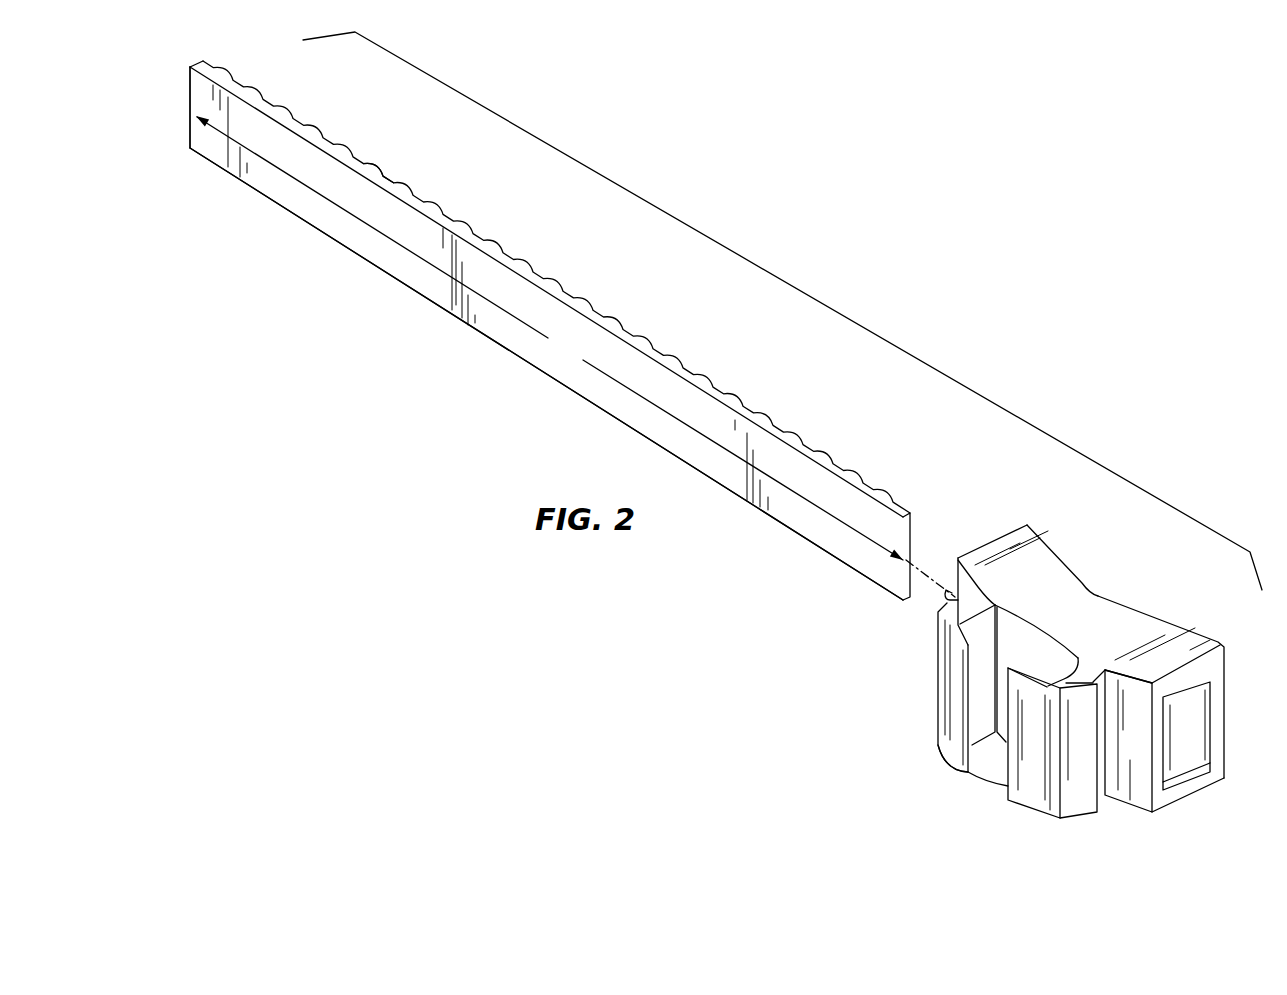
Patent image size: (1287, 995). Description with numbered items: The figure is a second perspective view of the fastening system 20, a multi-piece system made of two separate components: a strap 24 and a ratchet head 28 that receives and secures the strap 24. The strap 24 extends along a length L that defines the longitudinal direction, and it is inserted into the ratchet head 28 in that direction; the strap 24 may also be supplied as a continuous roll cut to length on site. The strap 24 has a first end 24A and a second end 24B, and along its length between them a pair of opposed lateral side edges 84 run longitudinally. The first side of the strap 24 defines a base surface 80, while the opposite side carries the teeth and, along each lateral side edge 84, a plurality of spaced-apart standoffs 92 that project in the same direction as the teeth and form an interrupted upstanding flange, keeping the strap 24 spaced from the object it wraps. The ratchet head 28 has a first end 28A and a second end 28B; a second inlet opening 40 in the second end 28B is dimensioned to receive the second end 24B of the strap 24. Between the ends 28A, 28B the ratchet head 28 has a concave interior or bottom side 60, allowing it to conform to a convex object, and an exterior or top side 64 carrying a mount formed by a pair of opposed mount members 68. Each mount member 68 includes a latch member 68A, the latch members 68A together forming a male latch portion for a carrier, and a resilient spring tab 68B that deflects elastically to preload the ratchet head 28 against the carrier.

The fastening system 20 is at (708, 237).
The strap 24 is at (563, 330).
The first end of the strap 24A is at (908, 527).
The second end of the strap 24B is at (190, 127).
The ratchet head 28 is at (1134, 575).
The first end of the ratchet head 28A is at (988, 546).
The second end of the ratchet head 28B is at (1217, 645).
The second inlet opening 40 is at (1172, 782).
The bottom side 60 is at (1082, 578).
The top side 64 is at (1136, 781).
The mount members 68 is at (930, 724).
The latch member 68A is at (942, 597).
The resilient spring tab 68B is at (970, 776).
The base surface 80 is at (410, 226).
The lateral side edges 84 is at (288, 119).
The standoffs 92 is at (390, 177).